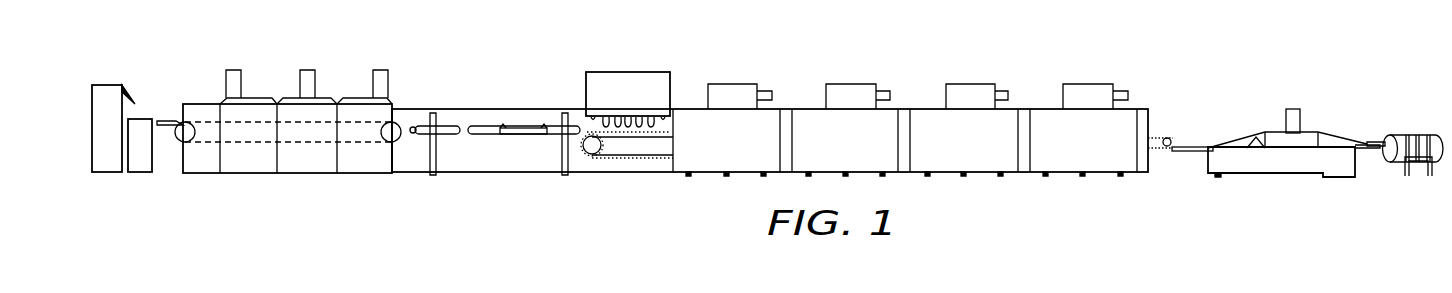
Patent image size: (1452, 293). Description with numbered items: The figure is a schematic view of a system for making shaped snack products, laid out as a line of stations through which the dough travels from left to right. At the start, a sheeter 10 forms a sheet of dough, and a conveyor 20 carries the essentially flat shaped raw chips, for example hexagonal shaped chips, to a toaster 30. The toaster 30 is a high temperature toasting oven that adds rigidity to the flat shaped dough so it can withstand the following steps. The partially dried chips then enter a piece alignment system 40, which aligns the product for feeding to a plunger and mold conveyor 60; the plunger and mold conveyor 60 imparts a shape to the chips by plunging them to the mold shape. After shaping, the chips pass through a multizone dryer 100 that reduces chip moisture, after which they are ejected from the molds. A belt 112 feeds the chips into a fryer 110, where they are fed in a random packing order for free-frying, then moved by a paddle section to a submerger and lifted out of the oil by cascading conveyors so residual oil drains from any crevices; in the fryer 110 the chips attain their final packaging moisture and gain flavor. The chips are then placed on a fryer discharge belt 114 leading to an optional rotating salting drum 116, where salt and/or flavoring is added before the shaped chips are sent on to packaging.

The sheeter 10 is at (109, 173).
The conveyor 20 is at (141, 173).
The toaster 30 is at (303, 175).
The piece alignment system 40 is at (487, 117).
The plunger and mold conveyor 60 is at (628, 72).
The multizone dryer 100 is at (918, 109).
The fryer 110 is at (1293, 177).
The belt 112 is at (1190, 147).
The fryer discharge belt 114 is at (1368, 142).
The salting drum 116 is at (1417, 133).